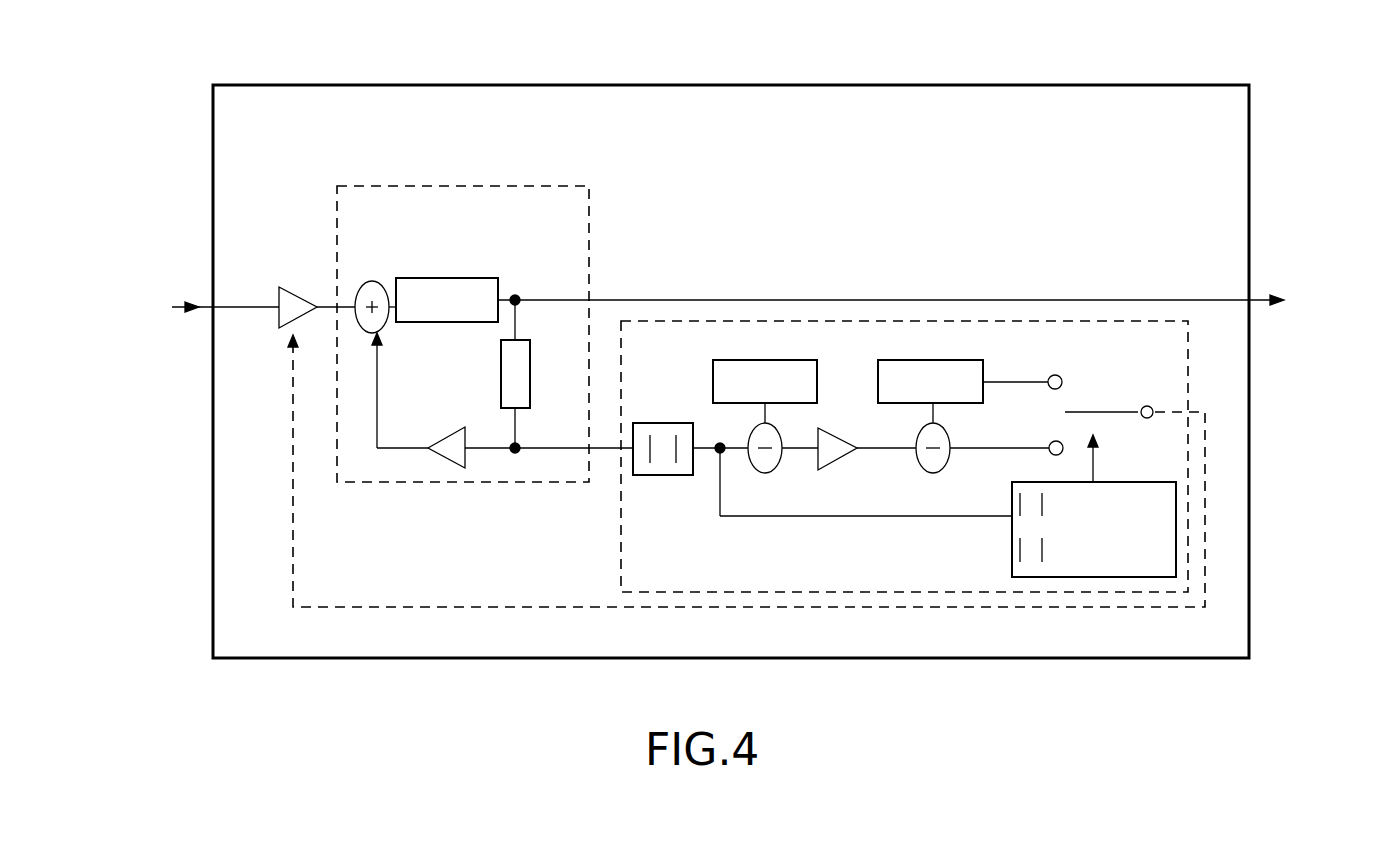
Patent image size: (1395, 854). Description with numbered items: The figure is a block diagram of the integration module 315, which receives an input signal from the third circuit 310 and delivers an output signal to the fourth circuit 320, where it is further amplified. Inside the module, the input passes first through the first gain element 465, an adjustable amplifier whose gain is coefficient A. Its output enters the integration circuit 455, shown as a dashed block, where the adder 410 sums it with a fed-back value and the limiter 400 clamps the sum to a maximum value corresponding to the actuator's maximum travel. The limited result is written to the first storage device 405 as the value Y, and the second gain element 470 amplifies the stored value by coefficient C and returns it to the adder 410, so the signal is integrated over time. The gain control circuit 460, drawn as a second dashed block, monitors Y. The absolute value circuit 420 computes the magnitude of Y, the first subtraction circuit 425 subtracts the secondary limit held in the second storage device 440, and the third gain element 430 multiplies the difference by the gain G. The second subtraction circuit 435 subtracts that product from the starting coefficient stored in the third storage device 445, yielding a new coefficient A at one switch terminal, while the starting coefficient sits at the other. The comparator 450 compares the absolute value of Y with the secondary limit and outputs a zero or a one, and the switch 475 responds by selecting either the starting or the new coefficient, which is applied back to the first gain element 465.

The integration module 315 is at (312, 85).
The third circuit 310 is at (182, 319).
The fourth circuit 320 is at (930, 344).
The limiter 400 is at (470, 278).
The first storage device 405 is at (530, 346).
The adder 410 is at (370, 281).
The absolute value circuit 420 is at (660, 476).
The first subtraction circuit 425 is at (765, 474).
The third gain element 430 is at (838, 466).
The second subtraction circuit 435 is at (933, 474).
The second storage device 440 is at (765, 360).
The third storage device 445 is at (933, 360).
The comparator 450 is at (1106, 577).
The integration circuit 455 is at (590, 193).
The gain control circuit 460 is at (1188, 385).
The first gain element 465 is at (299, 296).
The second gain element 470 is at (444, 435).
The switch 475 is at (1108, 412).